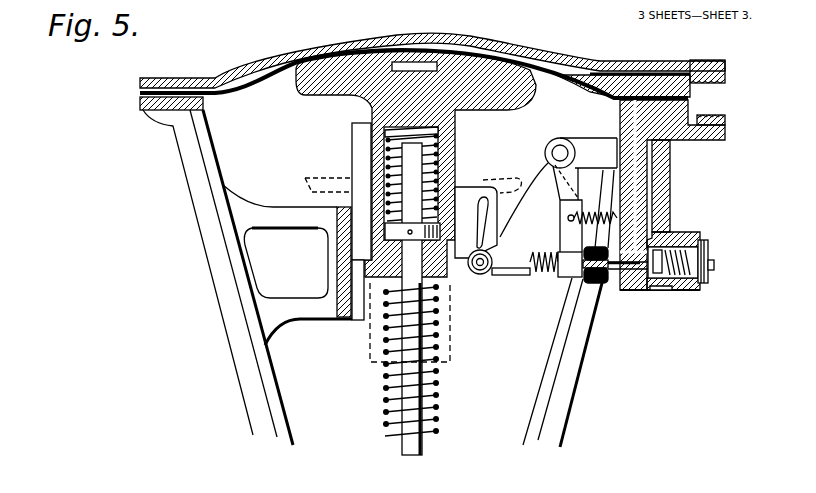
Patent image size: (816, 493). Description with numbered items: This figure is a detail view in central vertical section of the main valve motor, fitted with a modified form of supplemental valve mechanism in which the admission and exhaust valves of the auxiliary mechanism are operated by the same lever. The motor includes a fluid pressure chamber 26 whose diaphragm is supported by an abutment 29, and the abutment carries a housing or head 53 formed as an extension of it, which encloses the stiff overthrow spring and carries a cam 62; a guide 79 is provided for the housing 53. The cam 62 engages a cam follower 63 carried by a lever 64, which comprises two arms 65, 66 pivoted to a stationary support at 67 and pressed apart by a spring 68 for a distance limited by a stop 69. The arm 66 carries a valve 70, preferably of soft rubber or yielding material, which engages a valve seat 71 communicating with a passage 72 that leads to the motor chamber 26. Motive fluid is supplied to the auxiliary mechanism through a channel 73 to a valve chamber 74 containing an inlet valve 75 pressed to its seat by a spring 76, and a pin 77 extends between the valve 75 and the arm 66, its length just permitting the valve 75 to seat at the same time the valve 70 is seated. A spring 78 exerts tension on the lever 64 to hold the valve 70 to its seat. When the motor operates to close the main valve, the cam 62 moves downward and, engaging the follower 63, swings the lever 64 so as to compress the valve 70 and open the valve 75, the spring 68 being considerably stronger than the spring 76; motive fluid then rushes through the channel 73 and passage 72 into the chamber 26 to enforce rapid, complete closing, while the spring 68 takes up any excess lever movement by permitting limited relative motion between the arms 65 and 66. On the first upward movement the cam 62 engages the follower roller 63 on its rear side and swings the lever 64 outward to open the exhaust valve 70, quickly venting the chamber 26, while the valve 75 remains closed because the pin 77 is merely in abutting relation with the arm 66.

The fluid pressure chamber 26 is at (241, 70).
The abutment 29 is at (305, 90).
The housing 53 is at (385, 140).
The cam 62 is at (477, 196).
The cam follower 63 is at (480, 275).
The lever 64 is at (546, 273).
The arm 65 is at (500, 240).
The arm 66 is at (572, 279).
The pivot 67 is at (561, 150).
The spring 68 is at (543, 276).
The stop 69 is at (580, 199).
The valve 70 is at (604, 284).
The valve seat 71 is at (636, 282).
The passage 72 is at (633, 153).
The channel 73 is at (651, 200).
The valve chamber 74 is at (690, 250).
The inlet valve 75 is at (678, 291).
The spring 76 is at (706, 279).
The pin 77 is at (640, 294).
The spring 78 is at (652, 227).
The guide 79 is at (343, 320).